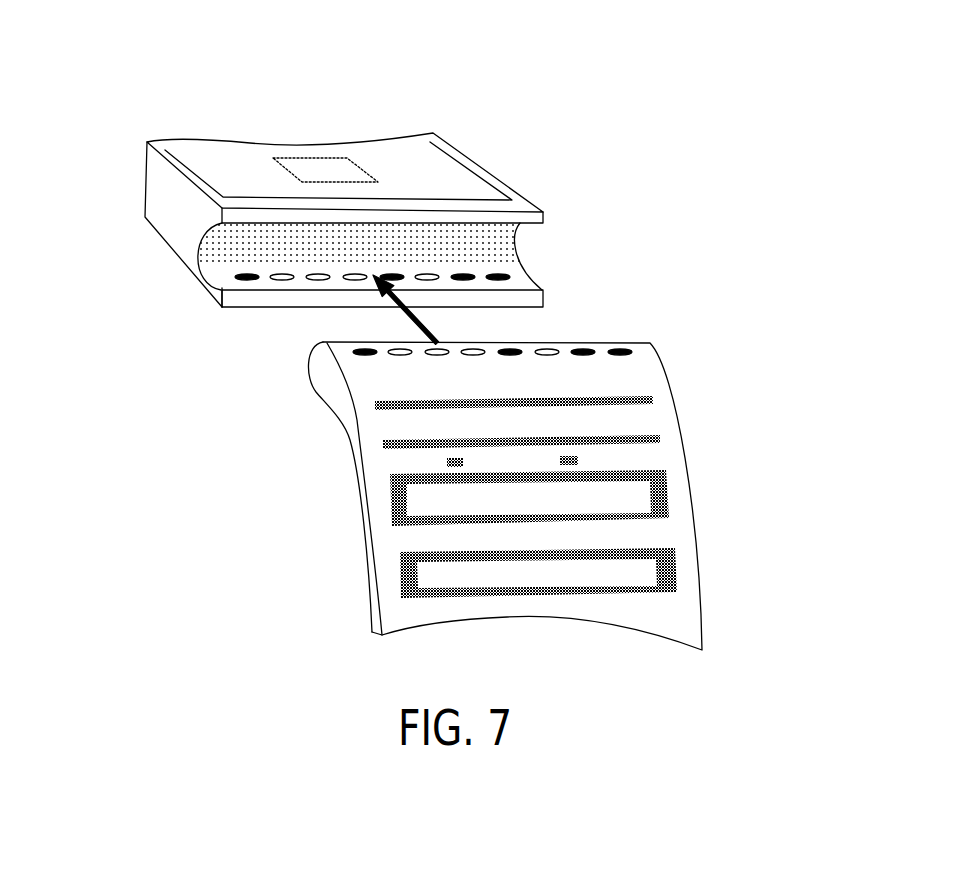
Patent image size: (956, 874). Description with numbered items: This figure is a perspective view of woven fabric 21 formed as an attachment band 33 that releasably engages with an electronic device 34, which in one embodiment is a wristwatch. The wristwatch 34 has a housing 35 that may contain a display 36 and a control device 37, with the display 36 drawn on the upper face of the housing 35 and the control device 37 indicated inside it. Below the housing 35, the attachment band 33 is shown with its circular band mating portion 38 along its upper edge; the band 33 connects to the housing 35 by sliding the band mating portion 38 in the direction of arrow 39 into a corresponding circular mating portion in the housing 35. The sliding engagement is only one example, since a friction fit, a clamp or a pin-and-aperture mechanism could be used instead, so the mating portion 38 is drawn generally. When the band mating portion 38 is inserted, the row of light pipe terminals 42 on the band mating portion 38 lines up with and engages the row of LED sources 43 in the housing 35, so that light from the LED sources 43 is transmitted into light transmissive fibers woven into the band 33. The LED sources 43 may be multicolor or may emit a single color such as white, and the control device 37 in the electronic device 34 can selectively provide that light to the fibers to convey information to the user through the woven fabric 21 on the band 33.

The woven fabric 21 is at (672, 453).
The attachment band 33 is at (748, 283).
The electronic device 34 is at (447, 90).
The housing 35 is at (147, 221).
The display 36 is at (460, 152).
The control device 37 is at (320, 157).
The band mating portion 38 is at (316, 396).
The arrow 39 is at (440, 327).
The light pipe terminals 42 is at (590, 348).
The LED sources 43 is at (237, 277).